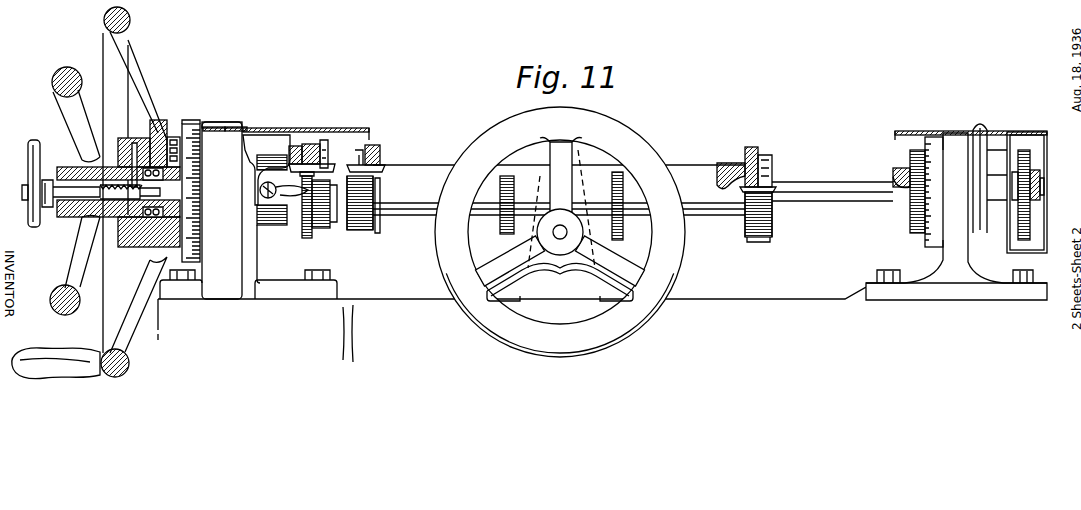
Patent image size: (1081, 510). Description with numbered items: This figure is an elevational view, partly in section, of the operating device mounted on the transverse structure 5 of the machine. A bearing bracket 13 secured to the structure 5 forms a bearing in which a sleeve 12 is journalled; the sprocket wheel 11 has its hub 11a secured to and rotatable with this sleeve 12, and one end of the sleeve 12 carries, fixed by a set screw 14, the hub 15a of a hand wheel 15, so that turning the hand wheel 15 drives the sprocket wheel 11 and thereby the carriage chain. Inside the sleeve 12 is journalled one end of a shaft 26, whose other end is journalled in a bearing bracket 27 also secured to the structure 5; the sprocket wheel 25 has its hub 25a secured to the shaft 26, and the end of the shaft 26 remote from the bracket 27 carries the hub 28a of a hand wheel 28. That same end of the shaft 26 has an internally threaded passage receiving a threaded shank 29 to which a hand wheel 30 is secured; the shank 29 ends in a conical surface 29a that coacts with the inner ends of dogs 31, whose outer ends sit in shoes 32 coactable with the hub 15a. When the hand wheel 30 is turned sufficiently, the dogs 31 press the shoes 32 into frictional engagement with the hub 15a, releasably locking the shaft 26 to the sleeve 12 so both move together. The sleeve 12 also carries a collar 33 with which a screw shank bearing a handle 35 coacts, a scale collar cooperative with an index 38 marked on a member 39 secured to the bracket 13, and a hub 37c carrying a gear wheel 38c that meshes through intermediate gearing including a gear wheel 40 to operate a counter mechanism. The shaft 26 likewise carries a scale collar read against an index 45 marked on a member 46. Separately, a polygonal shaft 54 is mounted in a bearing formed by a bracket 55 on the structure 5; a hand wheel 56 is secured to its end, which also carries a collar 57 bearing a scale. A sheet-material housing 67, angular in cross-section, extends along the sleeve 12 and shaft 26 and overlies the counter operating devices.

The transverse structure 5 is at (333, 313).
The second sprocket wheel 11 is at (379, 147).
The hub 11a is at (358, 232).
The sleeve 12 is at (428, 164).
The bearing bracket 13 is at (222, 210).
The set screw 14 is at (190, 124).
The hand wheel 15 is at (130, 15).
The hub 15a is at (162, 132).
The sprocket wheel 25 is at (750, 147).
The hub 25a is at (760, 237).
The shaft 26 is at (829, 201).
The bearing bracket 27 is at (993, 135).
The hand wheel 28 is at (67, 67).
The hub 28a is at (62, 168).
The threaded shank 29 is at (75, 266).
The conical surface 29a is at (125, 237).
The hand wheel 30 is at (30, 158).
The dogs 31 is at (142, 150).
The shoes 32 is at (135, 140).
The collar 33 is at (270, 158).
The handle 35 is at (284, 205).
The hub 37c is at (322, 228).
The index 38 is at (212, 127).
The gear wheel 38c is at (307, 238).
The member 39 is at (242, 127).
The gear wheel 40 is at (312, 144).
The index 45 is at (947, 137).
The member 46 is at (970, 178).
The shaft 54 is at (563, 230).
The bracket 55 is at (575, 282).
The hand wheel 56 is at (515, 336).
The collar 57 is at (623, 238).
The housing 67 is at (298, 146).